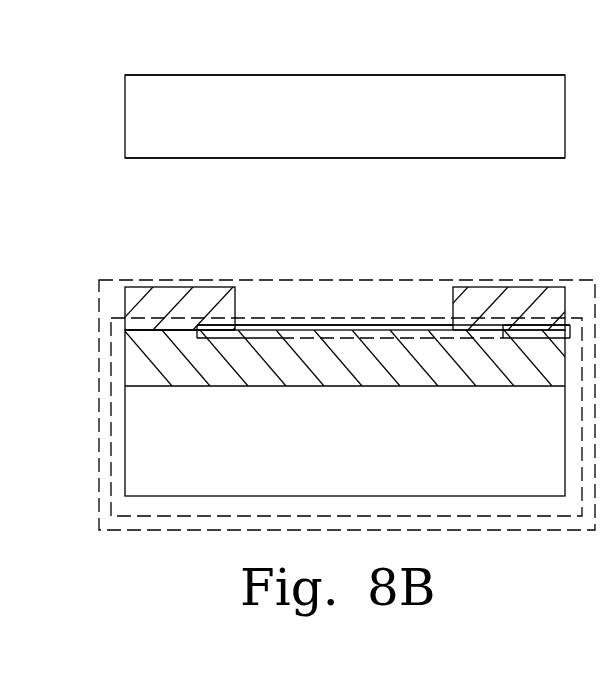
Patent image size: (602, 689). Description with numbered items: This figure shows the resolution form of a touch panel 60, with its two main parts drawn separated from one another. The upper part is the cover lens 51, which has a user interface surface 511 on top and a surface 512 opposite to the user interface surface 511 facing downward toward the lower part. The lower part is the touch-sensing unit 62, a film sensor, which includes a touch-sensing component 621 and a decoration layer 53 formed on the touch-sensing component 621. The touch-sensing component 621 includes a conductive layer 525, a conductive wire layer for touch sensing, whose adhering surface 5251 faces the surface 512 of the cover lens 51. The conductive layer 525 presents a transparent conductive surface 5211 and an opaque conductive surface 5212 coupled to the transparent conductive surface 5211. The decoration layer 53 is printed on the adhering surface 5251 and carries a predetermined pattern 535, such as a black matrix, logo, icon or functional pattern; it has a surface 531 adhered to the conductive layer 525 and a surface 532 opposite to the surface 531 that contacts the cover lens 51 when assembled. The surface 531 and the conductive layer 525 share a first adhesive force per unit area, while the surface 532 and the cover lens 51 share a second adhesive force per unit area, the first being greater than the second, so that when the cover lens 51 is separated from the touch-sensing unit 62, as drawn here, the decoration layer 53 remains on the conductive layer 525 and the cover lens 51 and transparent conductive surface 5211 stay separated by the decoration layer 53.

The touch panel 60 is at (555, 49).
The cover lens 51 is at (158, 118).
The user interface surface 511 is at (278, 75).
The surface 512 is at (289, 160).
The touch-sensing unit 62 is at (112, 278).
The touch-sensing component 621 is at (110, 472).
The decoration layer 53 is at (152, 305).
The surface 531 is at (145, 332).
The surface 532 is at (173, 287).
The predetermined pattern 535 is at (486, 276).
The conductive layer 525 is at (420, 368).
The adhering surface 5251 is at (307, 325).
The transparent conductive surface 5211 is at (263, 323).
The opaque conductive surface 5212 is at (530, 323).